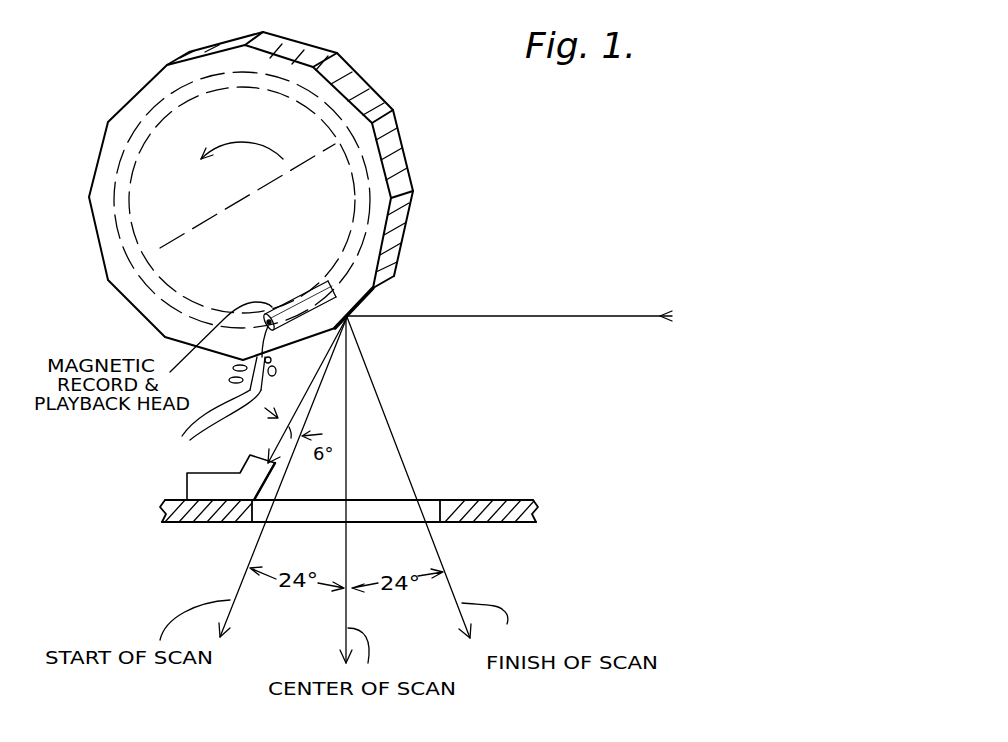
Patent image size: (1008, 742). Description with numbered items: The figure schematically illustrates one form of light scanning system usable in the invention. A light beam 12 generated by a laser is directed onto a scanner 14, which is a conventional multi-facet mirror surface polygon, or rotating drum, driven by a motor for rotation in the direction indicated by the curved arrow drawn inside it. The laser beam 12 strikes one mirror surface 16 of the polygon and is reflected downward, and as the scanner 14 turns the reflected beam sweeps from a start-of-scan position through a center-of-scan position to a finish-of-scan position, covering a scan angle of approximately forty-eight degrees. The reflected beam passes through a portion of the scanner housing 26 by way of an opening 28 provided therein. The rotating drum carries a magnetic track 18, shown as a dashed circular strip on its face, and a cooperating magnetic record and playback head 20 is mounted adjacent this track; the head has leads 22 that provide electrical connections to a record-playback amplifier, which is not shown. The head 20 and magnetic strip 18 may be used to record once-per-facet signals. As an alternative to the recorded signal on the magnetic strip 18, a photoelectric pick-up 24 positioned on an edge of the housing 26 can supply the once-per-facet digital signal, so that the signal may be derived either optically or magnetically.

The light beam 12 is at (572, 320).
The scanner 14 is at (292, 68).
The mirror surface 16 is at (373, 100).
The magnetic track 18 is at (353, 225).
The magnetic record and playback head 20 is at (307, 298).
The leads 22 is at (211, 375).
The photoelectric pick-up 24 is at (248, 462).
The scanner housing 26 is at (497, 498).
The opening 28 is at (371, 525).